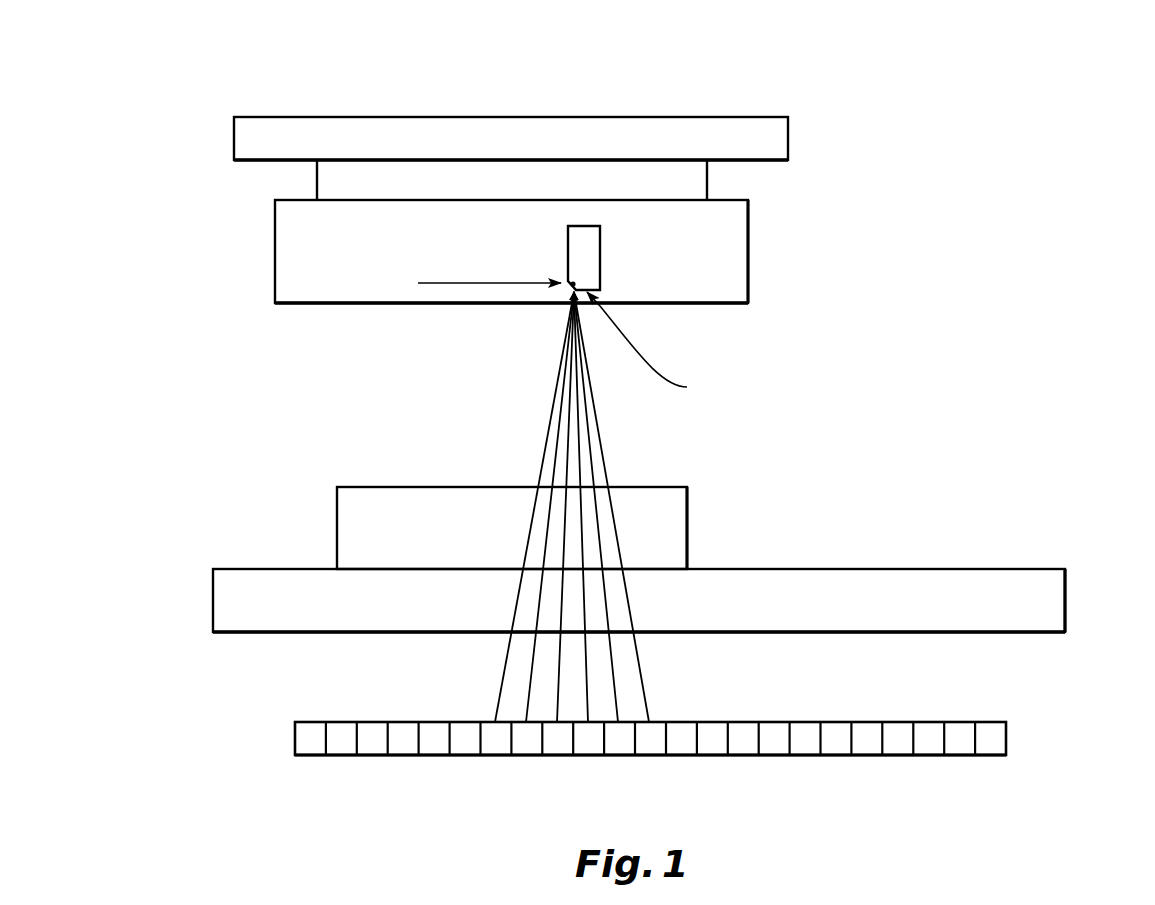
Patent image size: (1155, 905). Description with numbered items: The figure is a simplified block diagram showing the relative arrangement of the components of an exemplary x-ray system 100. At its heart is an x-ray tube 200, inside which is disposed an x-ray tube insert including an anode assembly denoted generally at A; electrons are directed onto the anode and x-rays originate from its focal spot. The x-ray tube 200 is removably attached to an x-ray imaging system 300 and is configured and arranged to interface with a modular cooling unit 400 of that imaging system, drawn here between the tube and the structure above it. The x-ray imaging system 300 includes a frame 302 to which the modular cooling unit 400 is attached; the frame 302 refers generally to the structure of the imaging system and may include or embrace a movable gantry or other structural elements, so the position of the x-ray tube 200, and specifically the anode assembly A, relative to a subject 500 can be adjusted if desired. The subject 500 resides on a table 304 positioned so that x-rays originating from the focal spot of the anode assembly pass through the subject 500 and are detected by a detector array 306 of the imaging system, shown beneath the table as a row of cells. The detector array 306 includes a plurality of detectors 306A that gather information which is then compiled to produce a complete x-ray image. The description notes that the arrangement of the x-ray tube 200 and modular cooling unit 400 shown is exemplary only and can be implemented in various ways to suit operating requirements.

The x-ray system 100 is at (1024, 99).
The x-ray tube 200 is at (266, 316).
The x-ray imaging system 300 is at (995, 327).
The frame 302 is at (299, 117).
The table 304 is at (1020, 570).
The detector array 306 is at (1021, 718).
The detectors 306A is at (897, 755).
The modular cooling unit 400 is at (716, 183).
The subject 500 is at (316, 526).